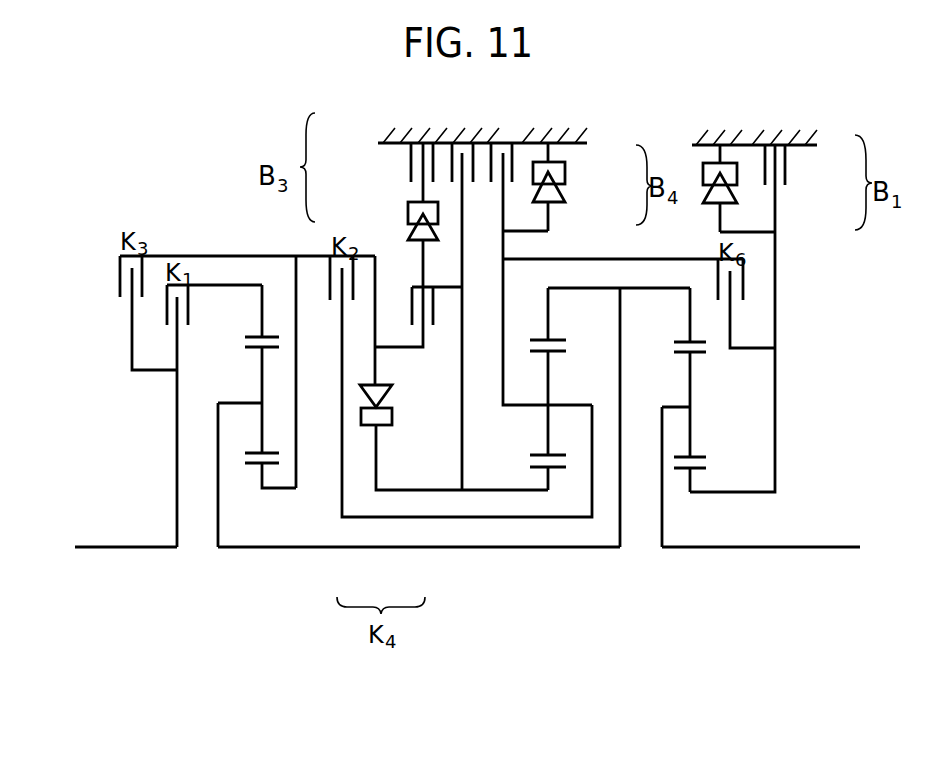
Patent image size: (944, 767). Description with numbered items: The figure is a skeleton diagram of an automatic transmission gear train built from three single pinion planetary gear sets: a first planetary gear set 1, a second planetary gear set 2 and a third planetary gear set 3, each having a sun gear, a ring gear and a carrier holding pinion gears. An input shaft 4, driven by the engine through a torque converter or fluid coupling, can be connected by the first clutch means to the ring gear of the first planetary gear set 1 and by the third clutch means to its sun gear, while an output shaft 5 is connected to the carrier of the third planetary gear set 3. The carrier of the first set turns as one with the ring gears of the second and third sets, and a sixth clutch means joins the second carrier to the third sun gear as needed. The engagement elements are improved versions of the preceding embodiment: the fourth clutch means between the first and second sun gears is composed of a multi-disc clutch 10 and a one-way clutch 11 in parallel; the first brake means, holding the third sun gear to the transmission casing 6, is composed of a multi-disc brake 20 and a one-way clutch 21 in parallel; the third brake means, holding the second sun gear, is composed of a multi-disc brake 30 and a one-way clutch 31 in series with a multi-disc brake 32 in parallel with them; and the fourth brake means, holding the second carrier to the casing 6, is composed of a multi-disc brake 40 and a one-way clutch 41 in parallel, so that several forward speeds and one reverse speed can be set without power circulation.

The first planetary gear set 1 is at (240, 320).
The second planetary gear set 2 is at (552, 505).
The third planetary gear set 3 is at (697, 516).
The input shaft 4 is at (113, 547).
The output shaft 5 is at (794, 547).
The transmission casing 6 is at (504, 140).
The multi-disc clutch 10 is at (433, 318).
The one-way clutch 11 is at (362, 430).
The multi-disc brake 20 is at (787, 161).
The one-way clutch 21 is at (732, 196).
The multi-disc brake 30 is at (412, 162).
The one-way clutch 31 is at (408, 214).
The multi-disc brake 32 is at (450, 149).
The multi-disc brake 40 is at (517, 150).
The one-way clutch 41 is at (562, 195).